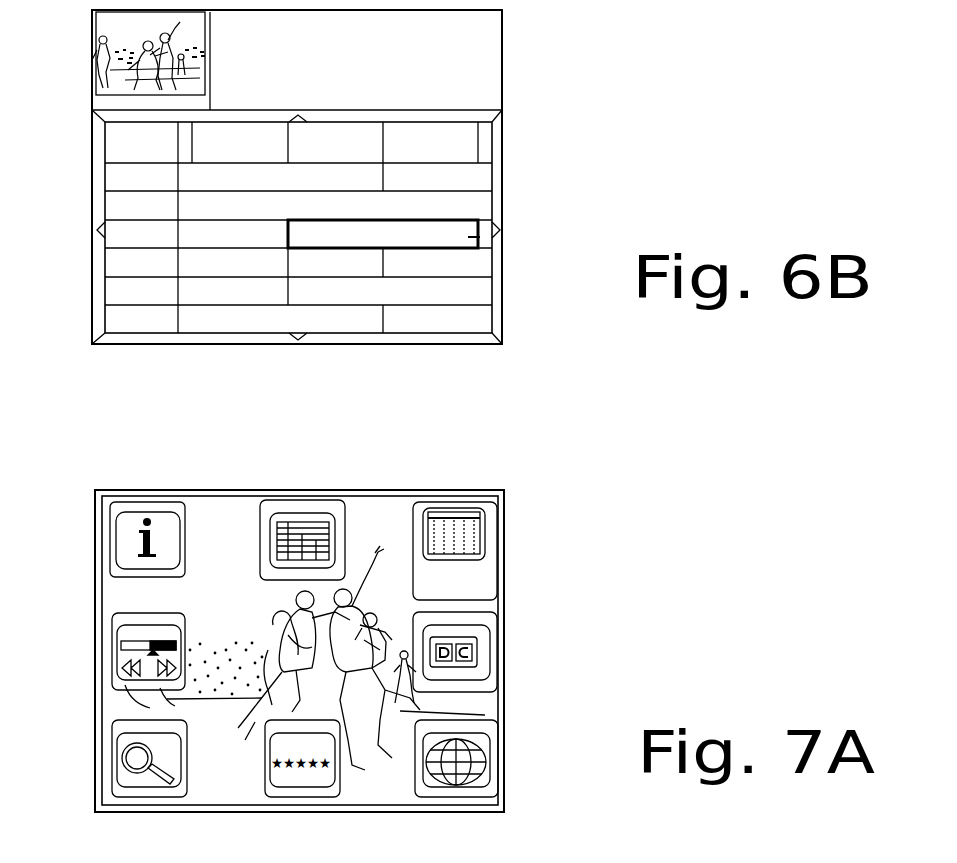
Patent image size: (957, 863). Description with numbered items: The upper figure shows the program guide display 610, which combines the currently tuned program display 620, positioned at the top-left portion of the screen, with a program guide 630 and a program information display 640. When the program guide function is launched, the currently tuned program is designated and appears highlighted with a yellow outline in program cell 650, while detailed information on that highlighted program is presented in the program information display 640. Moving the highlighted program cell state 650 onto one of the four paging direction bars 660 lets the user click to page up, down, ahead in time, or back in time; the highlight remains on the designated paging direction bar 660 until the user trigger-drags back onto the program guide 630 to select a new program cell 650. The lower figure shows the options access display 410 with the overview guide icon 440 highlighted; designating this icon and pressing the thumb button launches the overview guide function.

In FIG. 6B, the program guide display 610 is at (92, 150).
In FIG. 6B, the currently tuned program display 620 is at (92, 85).
In FIG. 6B, the program guide 630 is at (95, 258).
In FIG. 6B, the program information display 640 is at (495, 43).
In FIG. 6B, the program cell 650 is at (480, 237).
In FIG. 6B, the paging direction bar 660 is at (494, 225).
In FIG. 7A, the options access display 410 is at (495, 698).
In FIG. 7A, the overview guide icon 440 is at (495, 513).